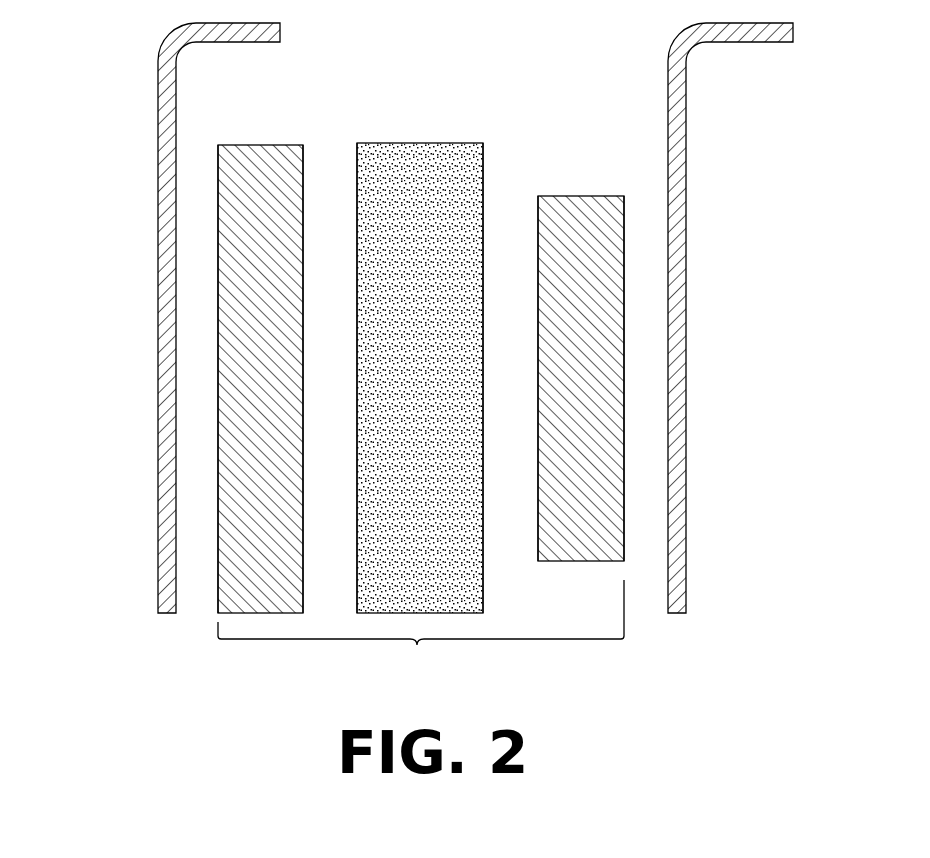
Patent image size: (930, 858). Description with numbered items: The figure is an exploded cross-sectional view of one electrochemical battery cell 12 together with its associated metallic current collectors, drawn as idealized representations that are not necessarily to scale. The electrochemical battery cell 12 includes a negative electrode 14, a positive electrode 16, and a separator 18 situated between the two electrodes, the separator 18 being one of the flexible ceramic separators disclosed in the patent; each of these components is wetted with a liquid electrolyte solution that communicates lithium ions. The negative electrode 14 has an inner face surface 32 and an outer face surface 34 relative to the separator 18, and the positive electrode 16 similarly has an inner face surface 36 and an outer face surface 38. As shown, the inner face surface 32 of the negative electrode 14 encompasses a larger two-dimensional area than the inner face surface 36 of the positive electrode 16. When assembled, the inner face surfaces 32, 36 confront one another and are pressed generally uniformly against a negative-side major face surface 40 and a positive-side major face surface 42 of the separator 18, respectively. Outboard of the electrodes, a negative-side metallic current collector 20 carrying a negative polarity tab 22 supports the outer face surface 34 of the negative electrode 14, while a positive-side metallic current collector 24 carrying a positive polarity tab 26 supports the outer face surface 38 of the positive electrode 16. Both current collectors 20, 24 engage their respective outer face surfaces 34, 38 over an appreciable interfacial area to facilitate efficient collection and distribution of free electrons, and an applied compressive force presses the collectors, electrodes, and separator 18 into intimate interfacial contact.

The electrochemical battery cell 12 is at (417, 642).
The negative electrode 14 is at (266, 145).
The positive electrode 16 is at (580, 196).
The separator 18 is at (420, 160).
The negative-side metallic current collector 20 is at (154, 318).
The negative polarity tab 22 is at (162, 111).
The positive-side metallic current collector 24 is at (741, 318).
The positive polarity tab 26 is at (684, 111).
The inner face surface of the negative electrode 32 is at (303, 265).
The outer face surface of the negative electrode 34 is at (220, 218).
The inner face surface of the positive electrode 36 is at (538, 268).
The outer face surface of the positive electrode 38 is at (624, 243).
The negative-side major face surface of the separator 40 is at (354, 320).
The positive-side major face surface of the separator 42 is at (483, 417).